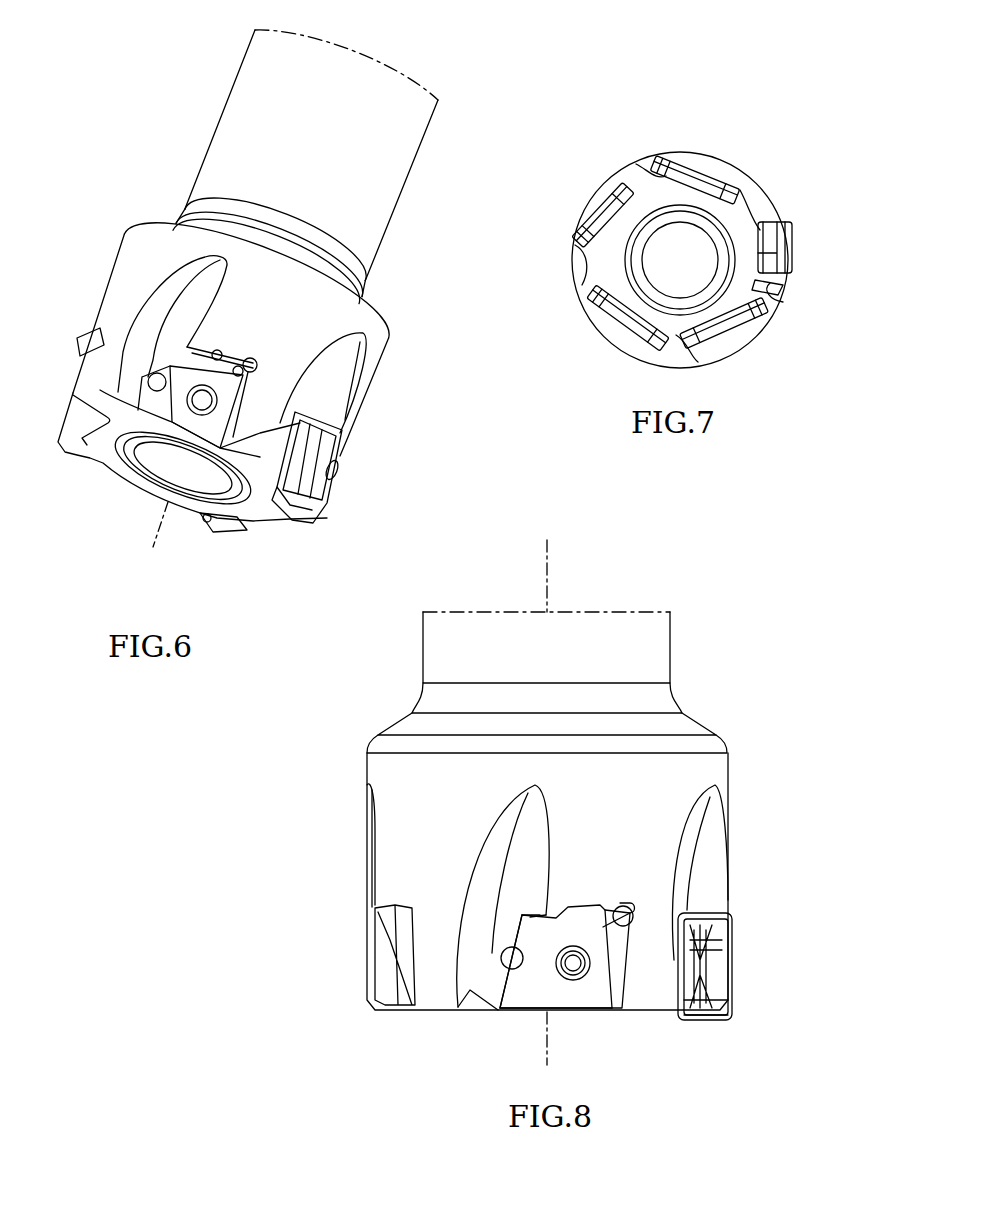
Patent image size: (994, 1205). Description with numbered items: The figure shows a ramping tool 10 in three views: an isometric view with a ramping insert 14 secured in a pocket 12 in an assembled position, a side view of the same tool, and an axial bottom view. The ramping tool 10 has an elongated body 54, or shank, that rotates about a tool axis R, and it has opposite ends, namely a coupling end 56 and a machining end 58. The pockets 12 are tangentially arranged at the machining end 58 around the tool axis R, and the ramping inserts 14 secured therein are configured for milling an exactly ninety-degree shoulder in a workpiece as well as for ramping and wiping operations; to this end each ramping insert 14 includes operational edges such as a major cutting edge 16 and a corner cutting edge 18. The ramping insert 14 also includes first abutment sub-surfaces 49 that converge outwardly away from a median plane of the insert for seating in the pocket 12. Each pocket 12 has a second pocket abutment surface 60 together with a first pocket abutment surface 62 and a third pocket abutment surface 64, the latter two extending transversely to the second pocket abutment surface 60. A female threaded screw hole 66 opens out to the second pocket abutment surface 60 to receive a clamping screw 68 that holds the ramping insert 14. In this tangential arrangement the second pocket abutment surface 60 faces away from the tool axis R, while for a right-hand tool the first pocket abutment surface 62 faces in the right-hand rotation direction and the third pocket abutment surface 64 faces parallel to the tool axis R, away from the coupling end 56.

In FIG. 6, the ramping tool 10 is at (133, 112).
In FIG. 8, the pocket 12 is at (533, 1022).
In FIG. 8, the ramping insert 14 is at (775, 937).
In FIG. 8, the major cutting edge 16 is at (730, 1005).
In FIG. 8, the corner cutting edge 18 is at (725, 1022).
In FIG. 8, the first abutment sub-surface 49 is at (715, 947).
In FIG. 6, the elongated body 54 is at (140, 172).
In FIG. 6, the coupling end 56 is at (242, 27).
In FIG. 8, the coupling end 56 is at (547, 682).
In FIG. 6, the machining end 58 is at (80, 285).
In FIG. 8, the machining end 58 is at (340, 885).
In FIG. 6, the second pocket abutment surface 60 is at (183, 465).
In FIG. 7, the second pocket abutment surface 60 is at (680, 260).
In FIG. 8, the second pocket abutment surface 60 is at (582, 1000).
In FIG. 8, the first pocket abutment surface 62 is at (605, 977).
In FIG. 8, the third pocket abutment surface 64 is at (527, 960).
In FIG. 8, the female threaded screw hole 66 is at (580, 967).
In FIG. 6, the clamping screw 68 is at (338, 472).
In FIG. 6, the tool axis R is at (165, 520).
In FIG. 8, the tool axis R is at (547, 790).